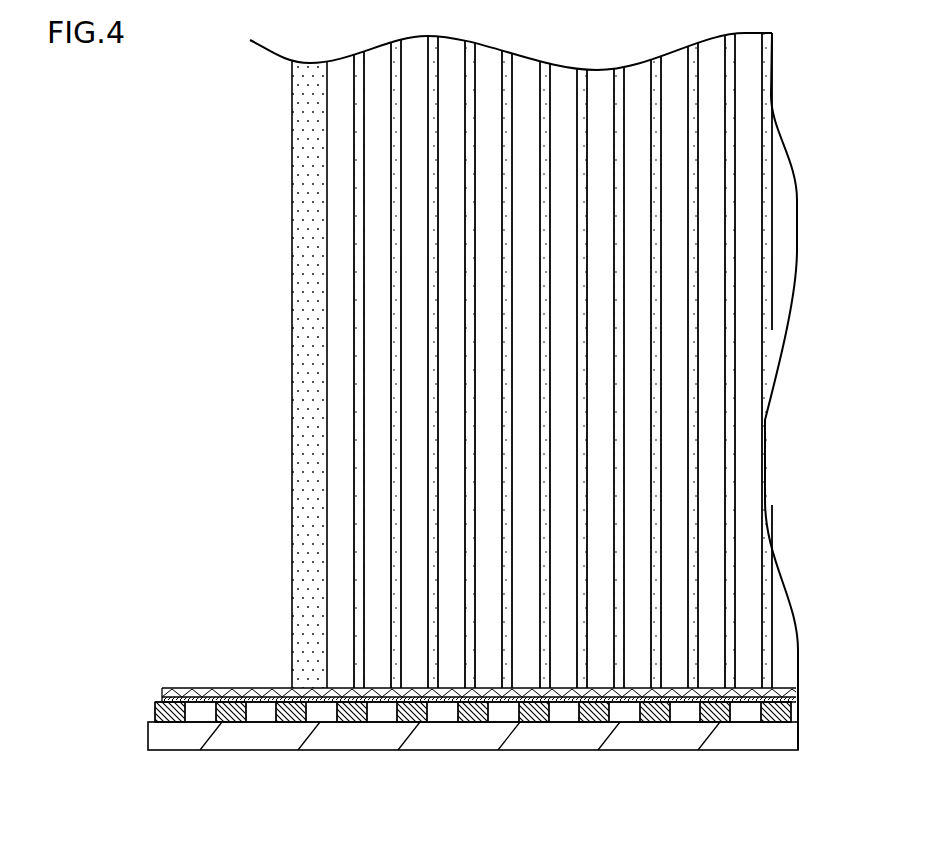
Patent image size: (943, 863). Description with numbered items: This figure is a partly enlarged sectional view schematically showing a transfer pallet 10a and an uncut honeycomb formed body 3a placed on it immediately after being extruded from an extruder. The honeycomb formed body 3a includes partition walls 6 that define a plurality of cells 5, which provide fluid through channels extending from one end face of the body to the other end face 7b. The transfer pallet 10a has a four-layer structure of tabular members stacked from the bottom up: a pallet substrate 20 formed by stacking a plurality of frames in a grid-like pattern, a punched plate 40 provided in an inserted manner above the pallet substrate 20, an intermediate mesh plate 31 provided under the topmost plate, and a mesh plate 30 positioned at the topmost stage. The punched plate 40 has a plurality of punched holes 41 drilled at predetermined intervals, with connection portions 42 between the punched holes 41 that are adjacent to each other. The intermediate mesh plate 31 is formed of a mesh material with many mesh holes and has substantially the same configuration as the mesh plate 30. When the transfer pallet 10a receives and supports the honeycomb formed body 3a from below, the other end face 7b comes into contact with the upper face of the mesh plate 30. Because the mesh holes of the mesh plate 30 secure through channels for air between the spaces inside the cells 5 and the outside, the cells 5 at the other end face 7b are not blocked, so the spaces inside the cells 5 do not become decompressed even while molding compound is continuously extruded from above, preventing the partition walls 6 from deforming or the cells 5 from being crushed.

The uncut honeycomb formed body 3a is at (207, 315).
The cells 5 is at (335, 430).
The partition walls 6 is at (358, 512).
The transfer pallet 10a is at (147, 544).
The pallet substrate 20 is at (282, 733).
The mesh plate 30 is at (193, 690).
The intermediate mesh plate 31 is at (157, 702).
The punched plate 40 is at (155, 708).
The punched holes 41 is at (555, 722).
The connection portions 42 is at (612, 722).
The other end face 7b is at (478, 725).